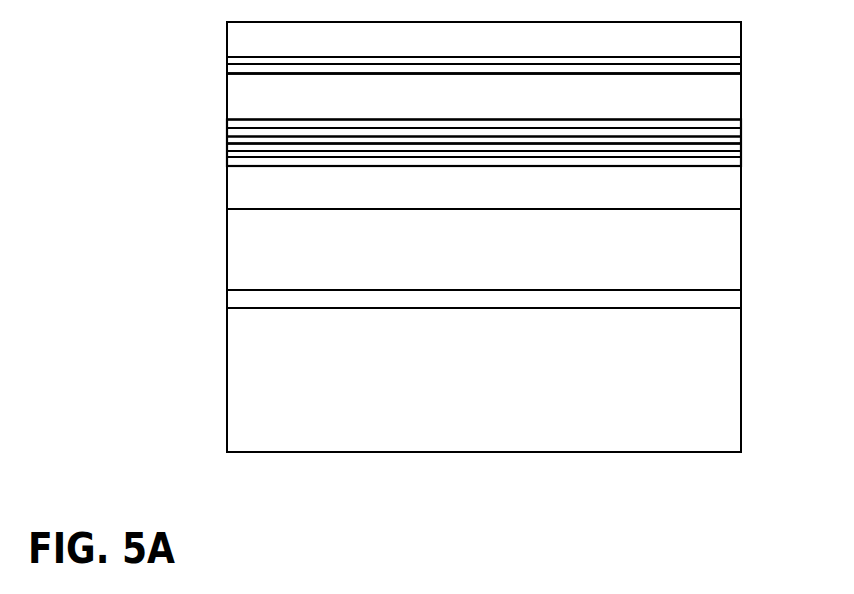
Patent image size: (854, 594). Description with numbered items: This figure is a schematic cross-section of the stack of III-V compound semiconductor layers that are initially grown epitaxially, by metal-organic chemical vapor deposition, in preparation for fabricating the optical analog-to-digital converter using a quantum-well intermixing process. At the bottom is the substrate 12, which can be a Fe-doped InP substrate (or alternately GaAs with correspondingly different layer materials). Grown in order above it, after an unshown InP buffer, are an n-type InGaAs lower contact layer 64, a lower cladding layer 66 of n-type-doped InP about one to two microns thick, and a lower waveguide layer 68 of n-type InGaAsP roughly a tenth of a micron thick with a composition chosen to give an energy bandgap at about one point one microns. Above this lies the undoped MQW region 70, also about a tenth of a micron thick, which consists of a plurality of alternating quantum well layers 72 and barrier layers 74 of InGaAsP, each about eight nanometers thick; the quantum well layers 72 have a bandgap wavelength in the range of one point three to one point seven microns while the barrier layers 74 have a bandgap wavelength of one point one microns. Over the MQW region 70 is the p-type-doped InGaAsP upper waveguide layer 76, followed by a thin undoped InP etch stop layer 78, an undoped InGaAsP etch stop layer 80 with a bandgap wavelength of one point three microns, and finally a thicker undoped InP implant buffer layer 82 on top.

The substrate 12 is at (292, 414).
The lower contact layer 64 is at (227, 300).
The lower cladding layer 66 is at (292, 259).
The lower waveguide layer 68 is at (292, 199).
The MQW region 70 is at (747, 122).
The quantum well layers 72 is at (227, 144).
The barrier layers 74 is at (227, 148).
The upper waveguide layer 76 is at (292, 108).
The etch stop layer 78 is at (227, 72).
The etch stop layer 80 is at (741, 62).
The implant buffer layer 82 is at (292, 50).